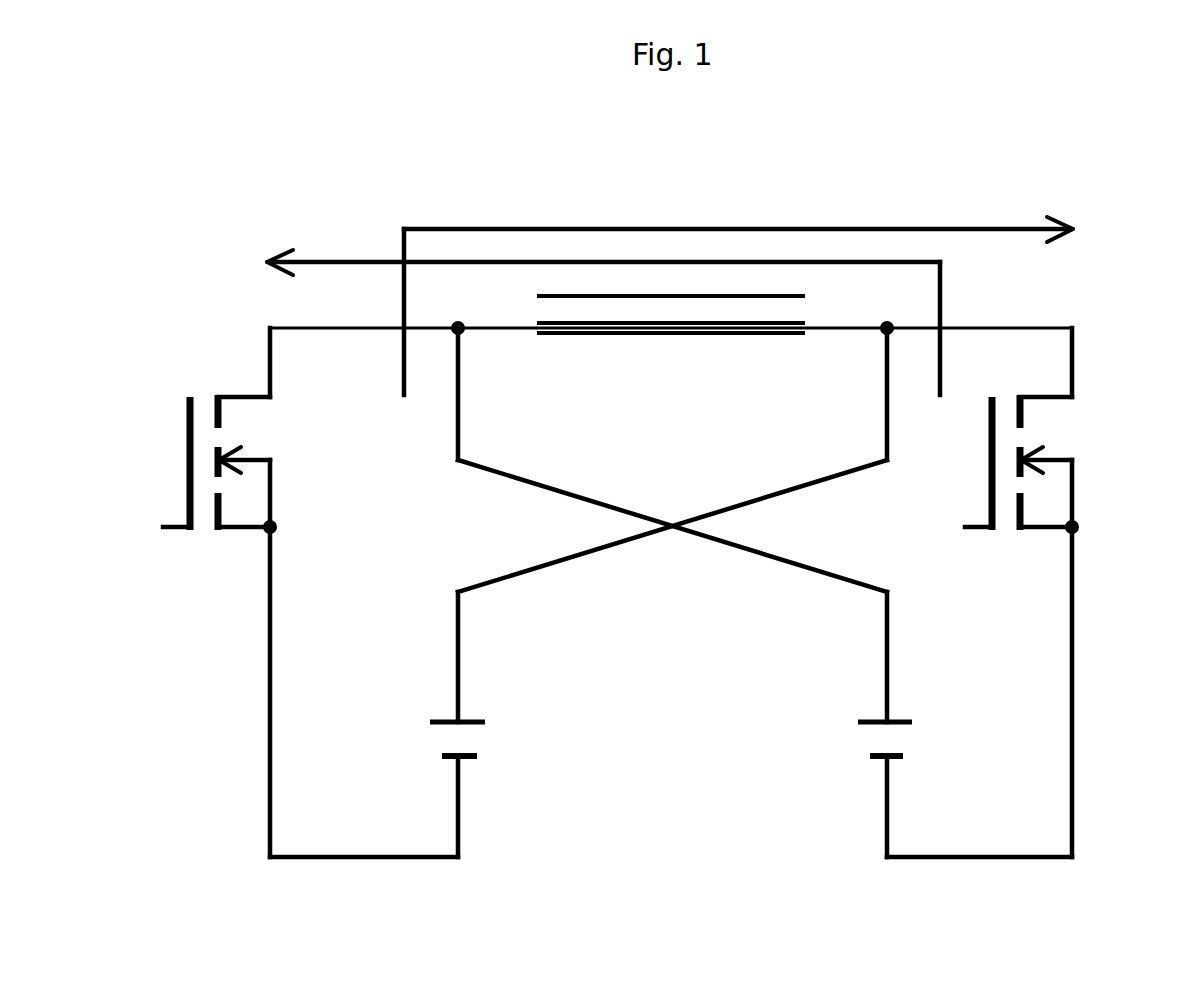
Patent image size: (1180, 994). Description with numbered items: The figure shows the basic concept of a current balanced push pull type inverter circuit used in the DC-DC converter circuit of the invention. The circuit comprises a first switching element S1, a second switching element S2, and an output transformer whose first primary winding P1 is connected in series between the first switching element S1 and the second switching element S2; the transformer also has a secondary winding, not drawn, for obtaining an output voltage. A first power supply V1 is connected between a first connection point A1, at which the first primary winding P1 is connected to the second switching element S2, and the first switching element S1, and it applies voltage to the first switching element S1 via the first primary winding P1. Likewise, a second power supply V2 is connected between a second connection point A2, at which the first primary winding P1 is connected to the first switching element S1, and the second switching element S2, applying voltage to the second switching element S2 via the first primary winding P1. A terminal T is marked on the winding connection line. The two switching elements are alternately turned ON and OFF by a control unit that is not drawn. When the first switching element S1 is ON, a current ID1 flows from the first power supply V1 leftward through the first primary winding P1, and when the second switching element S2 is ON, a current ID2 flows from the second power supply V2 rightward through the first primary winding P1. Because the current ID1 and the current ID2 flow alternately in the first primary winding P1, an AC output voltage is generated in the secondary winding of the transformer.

The terminal node T is at (477, 303).
The first connection point A1 is at (853, 390).
The second connection point A2 is at (498, 394).
The first primary winding P1 is at (671, 346).
The first switching element S1 is at (267, 464).
The second switching element S2 is at (1069, 464).
The first power supply V1 is at (496, 710).
The second power supply V2 is at (924, 710).
The current ID1 is at (560, 313).
The current ID2 is at (786, 299).